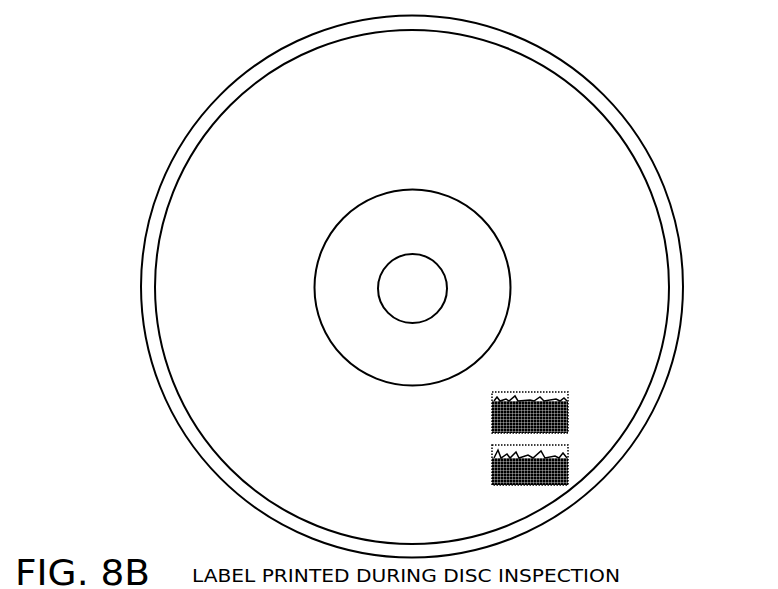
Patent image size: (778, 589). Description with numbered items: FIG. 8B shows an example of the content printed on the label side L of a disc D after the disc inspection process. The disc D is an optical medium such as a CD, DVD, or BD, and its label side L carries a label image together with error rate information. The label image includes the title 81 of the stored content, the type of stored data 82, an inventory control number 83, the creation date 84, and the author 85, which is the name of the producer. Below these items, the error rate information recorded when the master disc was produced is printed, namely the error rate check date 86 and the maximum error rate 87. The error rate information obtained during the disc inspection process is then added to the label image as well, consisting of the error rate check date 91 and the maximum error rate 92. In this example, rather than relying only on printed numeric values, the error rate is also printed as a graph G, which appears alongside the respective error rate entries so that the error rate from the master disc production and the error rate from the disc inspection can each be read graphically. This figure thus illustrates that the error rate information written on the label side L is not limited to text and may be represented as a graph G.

The title 81 is at (506, 75).
The type of stored data 82 is at (186, 288).
The inventory control number 83 is at (655, 281).
The creation date 84 is at (244, 397).
The author 85 is at (290, 158).
The error rate check date 86 is at (244, 417).
The maximum error rate 87 is at (244, 436).
The error rate check date 91 is at (244, 457).
The maximum error rate 92 is at (244, 476).
The disc D is at (626, 116).
The label side L is at (632, 178).
The graph G is at (578, 413).